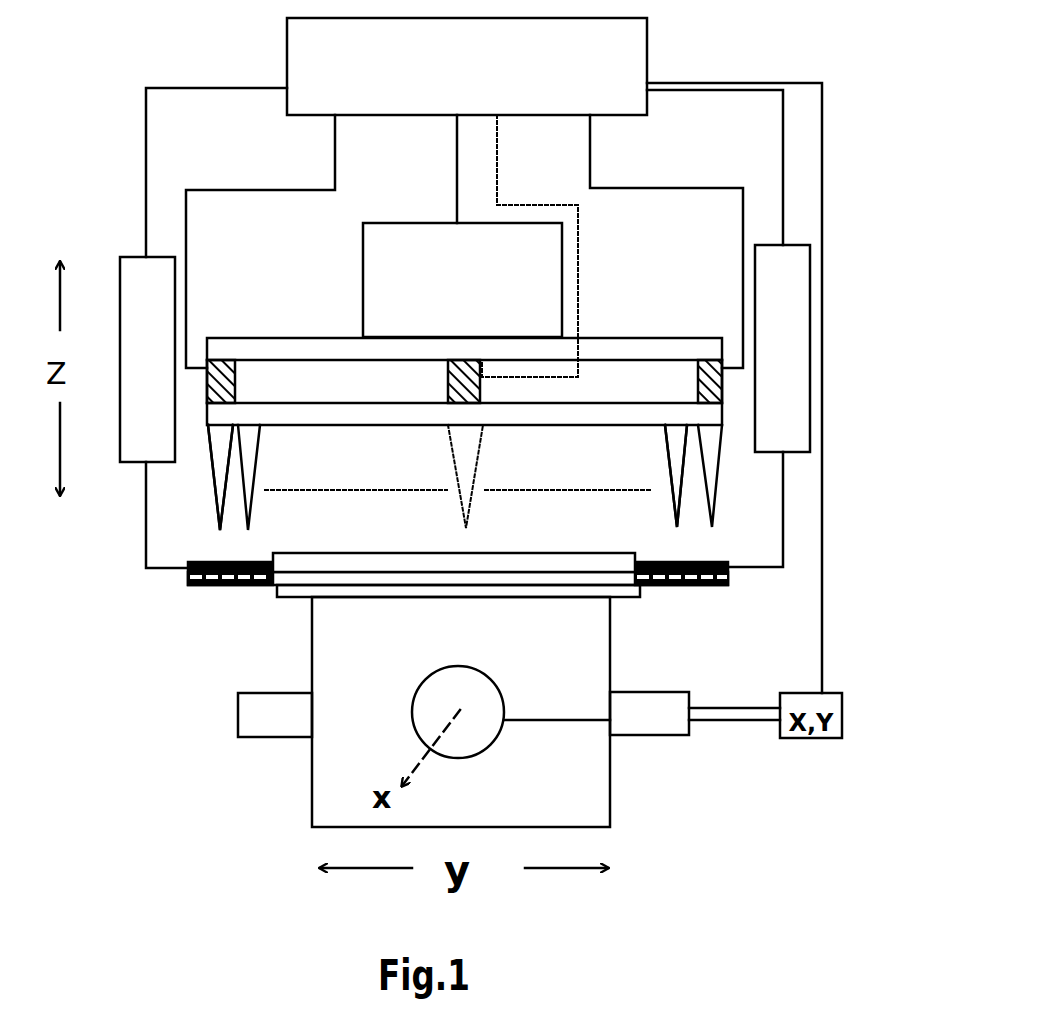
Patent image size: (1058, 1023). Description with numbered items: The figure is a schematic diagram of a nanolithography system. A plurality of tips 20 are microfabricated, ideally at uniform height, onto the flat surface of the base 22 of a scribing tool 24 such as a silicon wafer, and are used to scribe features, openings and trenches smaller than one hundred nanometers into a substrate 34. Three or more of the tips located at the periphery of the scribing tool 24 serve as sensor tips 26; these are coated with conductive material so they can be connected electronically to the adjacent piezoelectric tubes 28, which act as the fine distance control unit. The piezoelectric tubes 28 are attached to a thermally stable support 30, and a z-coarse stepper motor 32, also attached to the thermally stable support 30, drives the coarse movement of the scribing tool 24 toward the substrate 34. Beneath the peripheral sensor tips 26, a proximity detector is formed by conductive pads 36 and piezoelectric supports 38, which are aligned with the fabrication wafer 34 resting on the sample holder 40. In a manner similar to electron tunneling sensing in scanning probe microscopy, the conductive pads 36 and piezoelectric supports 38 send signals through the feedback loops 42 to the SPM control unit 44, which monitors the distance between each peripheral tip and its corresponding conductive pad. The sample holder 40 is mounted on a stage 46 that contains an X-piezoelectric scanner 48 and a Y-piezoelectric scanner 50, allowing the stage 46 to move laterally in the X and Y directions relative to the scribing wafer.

The tips 20 is at (250, 462).
The base 22 is at (425, 412).
The scribing tool 24 is at (675, 447).
The sensor tips 26 is at (217, 462).
The piezoelectric tubes 28 is at (238, 384).
The thermally stable support 30 is at (638, 348).
The z-coarse stepper motor 32 is at (545, 263).
The substrate 34 is at (563, 563).
The conductive pads 36 is at (245, 562).
The piezoelectric supports 38 is at (190, 577).
The sample holder 40 is at (618, 580).
The feedback loops 42 is at (133, 277).
The SPM control unit 44 is at (630, 53).
The stage 46 is at (600, 812).
The X-piezoelectric scanner 48 is at (283, 723).
The Y-piezoelectric scanner 50 is at (490, 698).